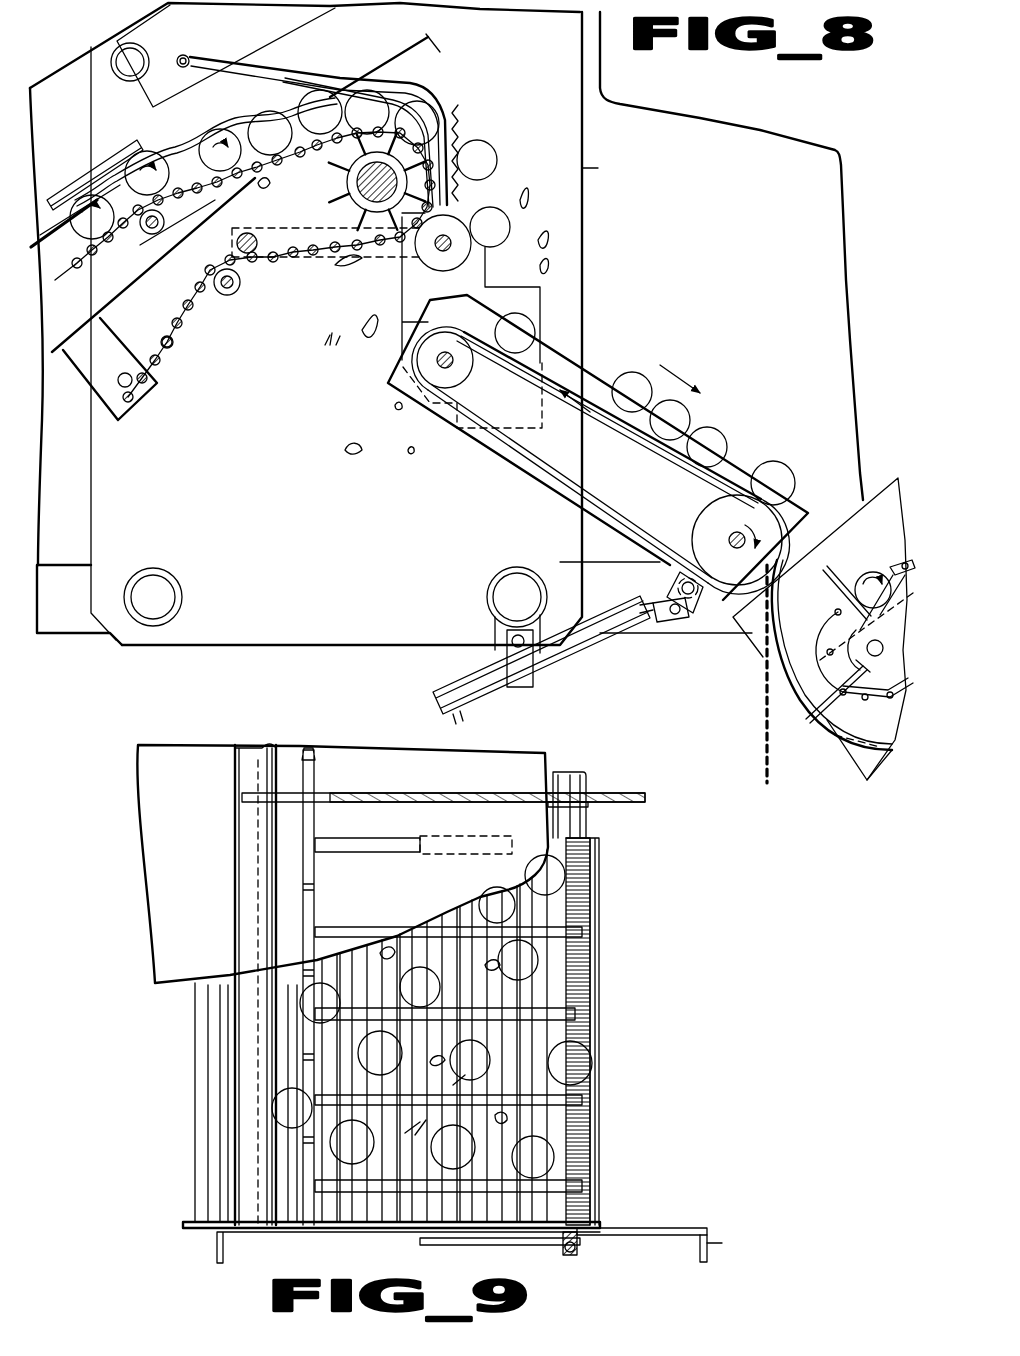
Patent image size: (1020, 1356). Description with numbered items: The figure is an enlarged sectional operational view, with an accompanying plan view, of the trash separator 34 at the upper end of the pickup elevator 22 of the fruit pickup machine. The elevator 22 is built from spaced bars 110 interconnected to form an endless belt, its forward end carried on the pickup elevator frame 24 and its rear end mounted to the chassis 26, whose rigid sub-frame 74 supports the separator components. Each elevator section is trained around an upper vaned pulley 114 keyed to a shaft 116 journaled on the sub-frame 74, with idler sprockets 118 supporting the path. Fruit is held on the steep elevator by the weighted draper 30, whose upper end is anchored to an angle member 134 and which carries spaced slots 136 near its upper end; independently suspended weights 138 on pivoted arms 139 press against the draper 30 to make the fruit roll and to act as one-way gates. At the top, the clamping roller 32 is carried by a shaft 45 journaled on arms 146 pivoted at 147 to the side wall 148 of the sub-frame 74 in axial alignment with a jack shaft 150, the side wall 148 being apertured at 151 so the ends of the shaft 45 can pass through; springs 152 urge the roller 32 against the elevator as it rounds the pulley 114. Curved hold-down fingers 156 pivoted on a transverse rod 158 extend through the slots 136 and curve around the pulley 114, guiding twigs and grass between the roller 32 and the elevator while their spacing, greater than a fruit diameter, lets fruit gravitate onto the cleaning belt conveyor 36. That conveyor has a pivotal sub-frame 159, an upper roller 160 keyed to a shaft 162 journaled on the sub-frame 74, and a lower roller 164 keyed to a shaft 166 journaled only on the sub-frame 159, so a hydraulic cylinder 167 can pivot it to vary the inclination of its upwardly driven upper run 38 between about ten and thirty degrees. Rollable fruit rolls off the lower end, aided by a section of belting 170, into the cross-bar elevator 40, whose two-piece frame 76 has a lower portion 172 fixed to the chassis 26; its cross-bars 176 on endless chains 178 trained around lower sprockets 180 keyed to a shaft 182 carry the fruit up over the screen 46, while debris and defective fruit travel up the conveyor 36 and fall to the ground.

In FIG. 8, the pickup elevator 22 is at (172, 383).
In FIG. 9, the pickup elevator 22 is at (200, 1123).
In FIG. 8, the pickup elevator frame 24 is at (50, 70).
In FIG. 8, the chassis 26 is at (74, 630).
In FIG. 8, the draper 30 is at (172, 150).
In FIG. 9, the draper 30 is at (200, 842).
In FIG. 8, the clamping roller 32 is at (468, 233).
In FIG. 9, the clamping roller 32 is at (588, 916).
In FIG. 8, the trash separator 34 is at (488, 104).
In FIG. 9, the trash separator 34 is at (612, 953).
In FIG. 8, the cleaning belt conveyor 36 is at (548, 486).
In FIG. 8, the upper run 38 is at (652, 452).
In FIG. 8, the cross-bar elevator 40 is at (822, 757).
In FIG. 8, the shaft 45 is at (438, 262).
In FIG. 9, the shaft 45 is at (577, 1256).
In FIG. 8, the screen 46 is at (842, 660).
In FIG. 8, the sub-frame 74 is at (605, 169).
In FIG. 9, the sub-frame 74 is at (730, 1245).
In FIG. 8, the two-piece frame 76 is at (892, 490).
In FIG. 8, the spaced bars 110 is at (168, 340).
In FIG. 9, the spaced bars 110 is at (215, 1070).
In FIG. 8, the upper vaned pulley 114 is at (352, 175).
In FIG. 8, the shaft 116 is at (356, 190).
In FIG. 8, the idler sprockets 118 is at (218, 285).
In FIG. 8, the angle member 134 is at (440, 46).
In FIG. 8, the slots 136 is at (368, 68).
In FIG. 9, the slots 136 is at (455, 848).
In FIG. 8, the weights 138 is at (108, 148).
In FIG. 8, the arms 139 is at (68, 188).
In FIG. 8, the arms 146 is at (340, 262).
In FIG. 9, the arms 146 is at (470, 1240).
In FIG. 8, the pivot 147 is at (254, 232).
In FIG. 9, the pivot 147 is at (365, 1236).
In FIG. 8, the side wall 148 is at (322, 582).
In FIG. 9, the side wall 148 is at (668, 1230).
In FIG. 8, the jack shaft 150 is at (250, 258).
In FIG. 8, the aperture 151 is at (538, 300).
In FIG. 8, the springs 152 is at (462, 130).
In FIG. 9, the springs 152 is at (580, 1250).
In FIG. 8, the hold-down fingers 156 is at (292, 80).
In FIG. 9, the hold-down fingers 156 is at (375, 916).
In FIG. 8, the rod 158 is at (188, 58).
In FIG. 9, the rod 158 is at (316, 757).
In FIG. 8, the conveyor sub-frame 159 is at (486, 445).
In FIG. 8, the upper roller 160 is at (430, 372).
In FIG. 8, the shaft 162 is at (436, 363).
In FIG. 8, the lower roller 164 is at (668, 574).
In FIG. 8, the shaft 166 is at (727, 551).
In FIG. 8, the hydraulic cylinder 167 is at (606, 655).
In FIG. 8, the section of belting 170 is at (762, 727).
In FIG. 8, the lower portion 172 is at (868, 782).
In FIG. 8, the cross-bars 176 is at (826, 576).
In FIG. 8, the endless chains 178 is at (888, 714).
In FIG. 8, the lower sprockets 180 is at (852, 690).
In FIG. 8, the shaft 182 is at (850, 641).